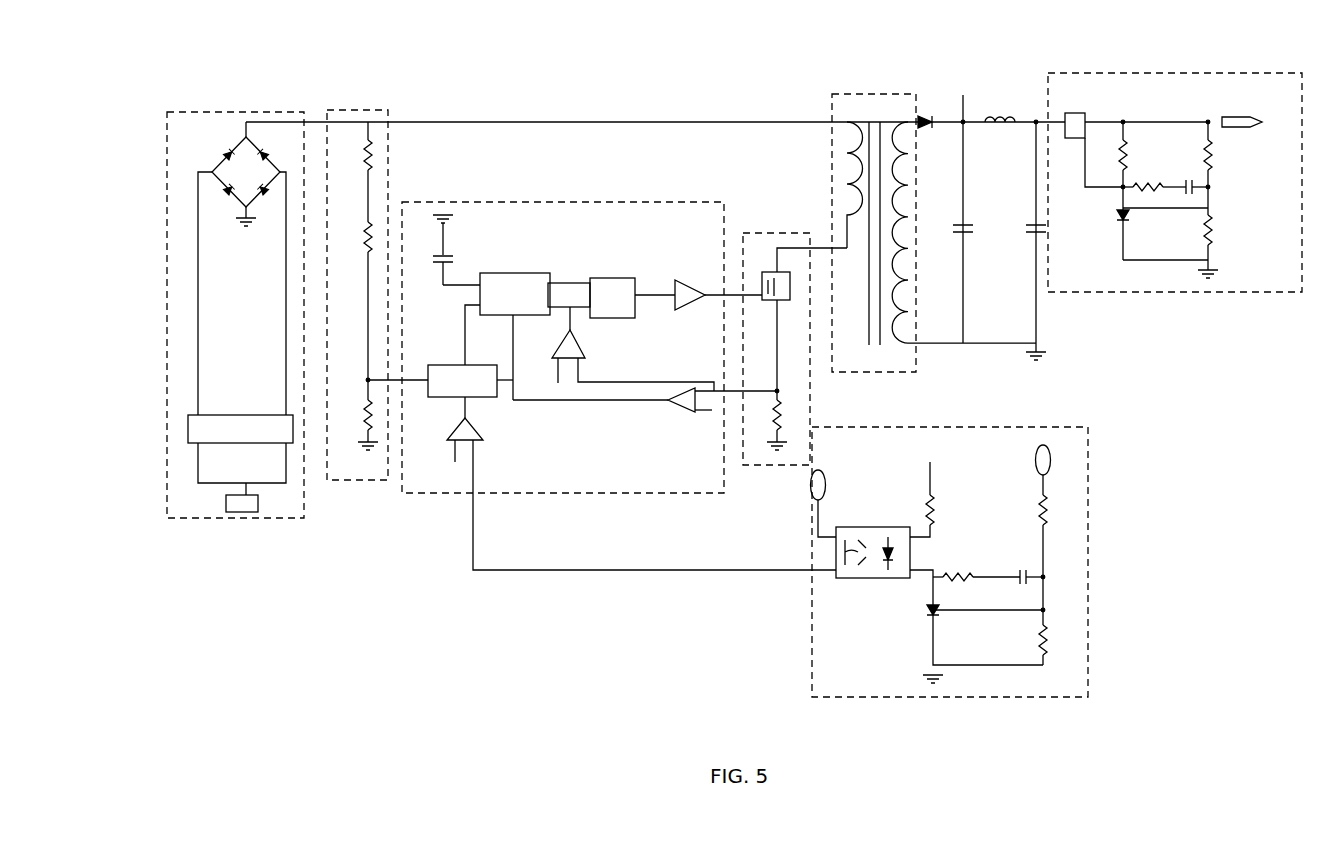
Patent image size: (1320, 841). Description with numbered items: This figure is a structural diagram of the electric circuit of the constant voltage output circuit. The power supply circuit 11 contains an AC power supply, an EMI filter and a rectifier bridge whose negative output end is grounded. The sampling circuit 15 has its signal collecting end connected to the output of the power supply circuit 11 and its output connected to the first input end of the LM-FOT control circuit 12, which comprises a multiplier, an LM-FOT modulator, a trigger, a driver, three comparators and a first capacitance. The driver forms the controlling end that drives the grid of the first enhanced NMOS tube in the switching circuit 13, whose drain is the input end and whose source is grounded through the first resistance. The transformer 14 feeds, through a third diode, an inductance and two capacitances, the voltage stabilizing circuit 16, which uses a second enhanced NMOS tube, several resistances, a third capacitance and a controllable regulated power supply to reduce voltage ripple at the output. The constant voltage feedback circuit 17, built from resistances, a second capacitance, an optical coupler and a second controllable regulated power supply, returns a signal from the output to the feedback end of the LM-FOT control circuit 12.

The power supply circuit 11 is at (240, 112).
The LM-FOT control circuit 12 is at (473, 202).
The switching circuit 13 is at (757, 233).
The transformer 14 is at (867, 94).
The sampling circuit 15 is at (364, 110).
The voltage stabilizing circuit 16 is at (1140, 73).
The constant voltage feedback circuit 17 is at (877, 427).